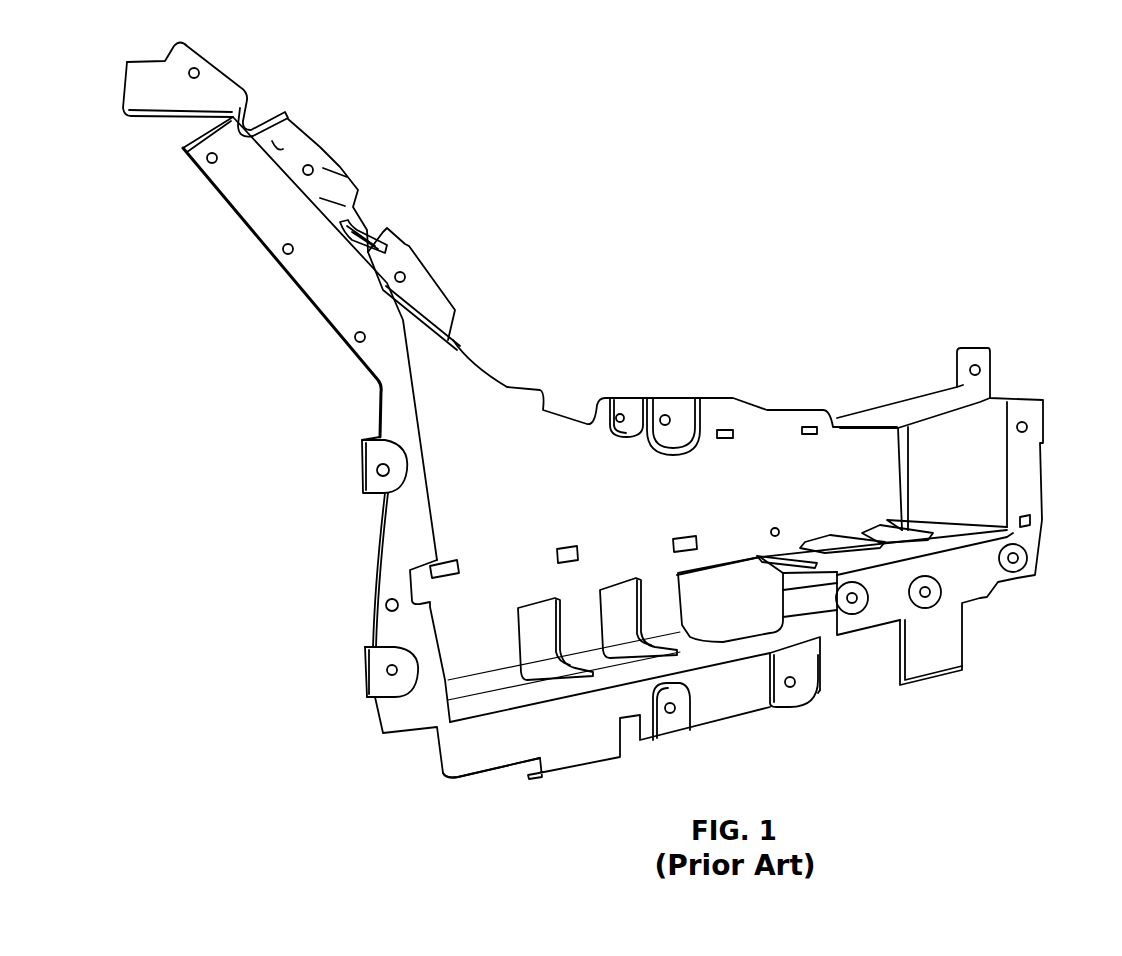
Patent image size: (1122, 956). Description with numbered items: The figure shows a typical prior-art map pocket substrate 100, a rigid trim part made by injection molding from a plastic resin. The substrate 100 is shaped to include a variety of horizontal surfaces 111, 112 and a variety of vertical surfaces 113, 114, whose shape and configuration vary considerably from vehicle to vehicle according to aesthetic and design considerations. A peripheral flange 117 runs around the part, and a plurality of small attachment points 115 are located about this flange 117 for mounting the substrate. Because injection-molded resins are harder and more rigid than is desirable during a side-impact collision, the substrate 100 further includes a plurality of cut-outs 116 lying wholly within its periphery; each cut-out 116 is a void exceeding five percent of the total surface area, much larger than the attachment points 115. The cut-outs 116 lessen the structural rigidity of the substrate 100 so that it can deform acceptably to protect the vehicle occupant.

The map pocket substrate 100 is at (928, 116).
The horizontal surface 111 is at (460, 703).
The horizontal surface 112 is at (955, 540).
The vertical surface 113 is at (775, 467).
The vertical surface 114 is at (988, 482).
The attachment points 115 is at (404, 277).
The cut-outs 116 is at (538, 620).
The peripheral flange 117 is at (680, 397).